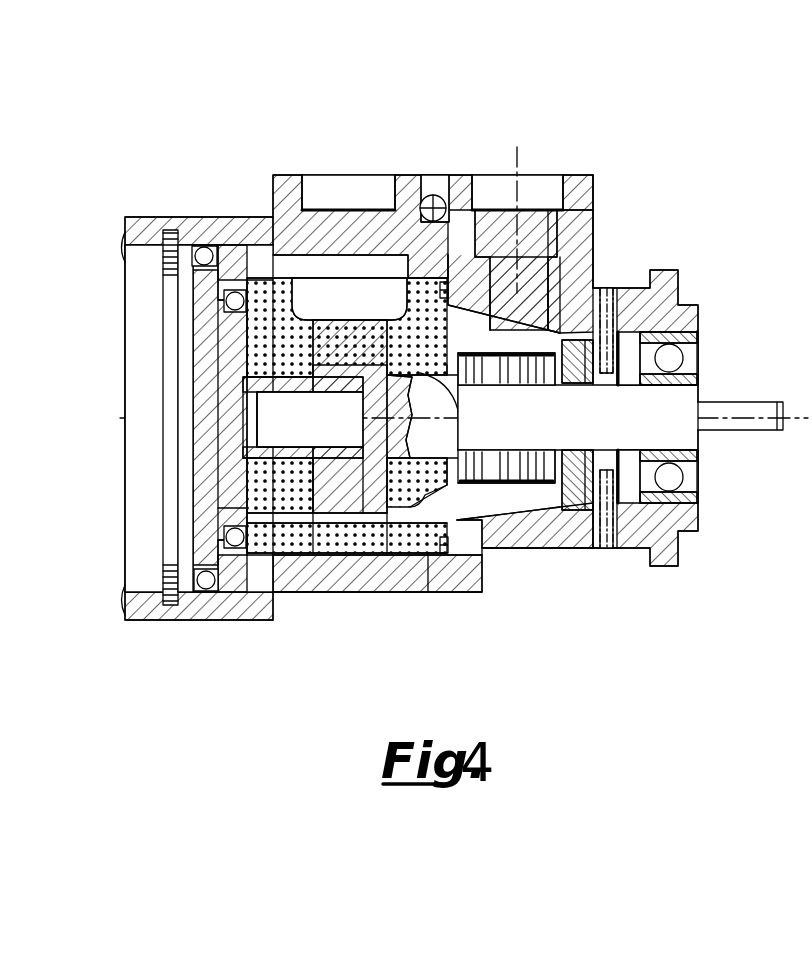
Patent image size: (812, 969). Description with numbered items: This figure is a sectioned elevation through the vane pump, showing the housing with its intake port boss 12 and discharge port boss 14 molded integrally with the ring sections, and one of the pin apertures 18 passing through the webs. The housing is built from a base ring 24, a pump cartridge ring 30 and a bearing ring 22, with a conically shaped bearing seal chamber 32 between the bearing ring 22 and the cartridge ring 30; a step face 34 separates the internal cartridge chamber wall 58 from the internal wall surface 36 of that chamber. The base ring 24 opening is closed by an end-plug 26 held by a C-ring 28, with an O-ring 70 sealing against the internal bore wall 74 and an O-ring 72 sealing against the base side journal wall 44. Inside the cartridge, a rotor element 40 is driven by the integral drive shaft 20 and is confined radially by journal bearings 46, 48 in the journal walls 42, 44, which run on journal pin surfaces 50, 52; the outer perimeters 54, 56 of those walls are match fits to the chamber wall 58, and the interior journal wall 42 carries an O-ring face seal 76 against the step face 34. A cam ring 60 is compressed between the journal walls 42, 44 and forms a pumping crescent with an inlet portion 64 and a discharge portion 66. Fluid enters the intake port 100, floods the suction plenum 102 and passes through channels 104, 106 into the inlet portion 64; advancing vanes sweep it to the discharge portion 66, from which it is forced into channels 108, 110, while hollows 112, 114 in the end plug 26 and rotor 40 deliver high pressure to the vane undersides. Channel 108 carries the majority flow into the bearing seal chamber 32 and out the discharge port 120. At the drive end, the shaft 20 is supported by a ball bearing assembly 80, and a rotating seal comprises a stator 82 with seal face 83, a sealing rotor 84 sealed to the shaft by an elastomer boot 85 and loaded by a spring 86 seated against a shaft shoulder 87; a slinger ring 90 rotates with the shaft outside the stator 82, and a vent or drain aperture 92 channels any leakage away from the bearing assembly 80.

The intake port boss 12 is at (272, 182).
The discharge port boss 14 is at (595, 180).
The pin aperture 18 is at (432, 278).
The cartridge rotor drive shaft 20 is at (735, 425).
The bearing ring 22 is at (638, 560).
The base ring 24 is at (170, 608).
The end-plug 26 is at (194, 432).
The C-ring 28 is at (170, 534).
The pump cartridge ring 30 is at (300, 558).
The bearing seal chamber 32 is at (470, 535).
The step face 34 is at (459, 358).
The internal wall surface 36 is at (446, 556).
The rotor element 40 is at (362, 470).
The interior journal wall 42 is at (452, 300).
The base side journal wall 44 is at (252, 283).
The journal bearing 46 is at (405, 450).
The journal bearing 48 is at (278, 420).
The journal pin surface 50 is at (420, 425).
The journal pin surface 52 is at (270, 375).
The outer perimeter of journal wall 54 is at (405, 556).
The outer perimeter of journal wall 56 is at (252, 585).
The internal cartridge chamber wall 58 is at (318, 556).
The cam ring 60 is at (292, 595).
The inlet portion of pumping crescent 64 is at (326, 285).
The discharge portion of pumping crescent 66 is at (340, 556).
The O-ring 70 is at (212, 620).
The O-ring 72 is at (226, 300).
The internal bore wall 74 is at (126, 255).
The O-ring face seal 76 is at (464, 300).
The ball bearing assembly 80 is at (700, 478).
The seal stator 82 is at (578, 512).
The seal face 83 is at (568, 512).
The sealing rotor 84 is at (545, 345).
The elastomer boot 85 is at (506, 358).
The seal loading spring 86 is at (500, 485).
The shaft shoulder 87 is at (448, 400).
The slinger ring 90 is at (628, 290).
The vent or drain aperture 92 is at (606, 292).
The intake port 100 is at (350, 275).
The suction plenum 102 is at (375, 285).
The channel 104 is at (385, 240).
The channel 106 is at (315, 260).
The channel 108 is at (382, 594).
The channel 110 is at (266, 518).
The hollow 112 is at (220, 471).
The hollow 114 is at (303, 417).
The discharge port 120 is at (540, 176).